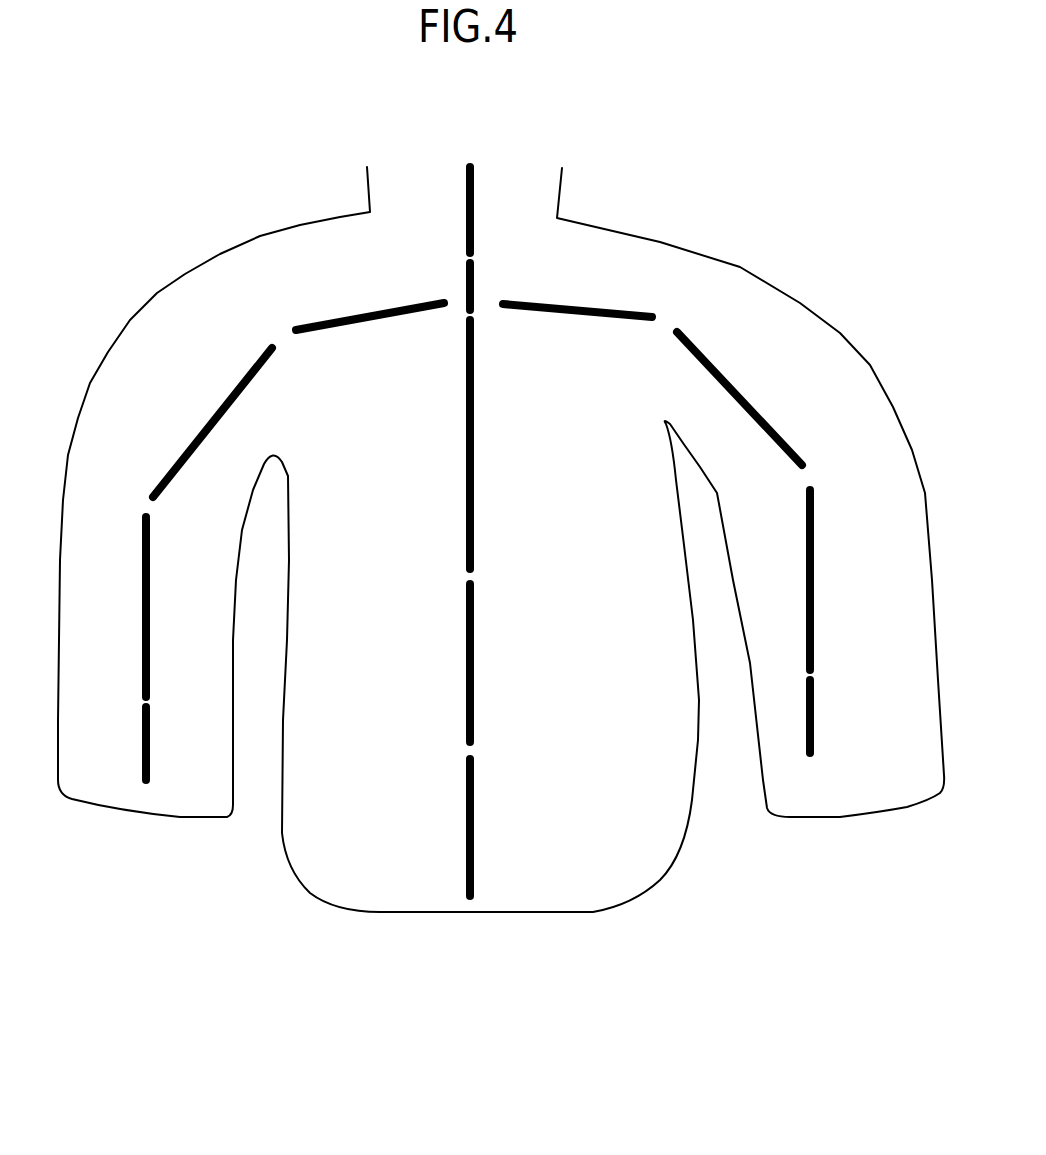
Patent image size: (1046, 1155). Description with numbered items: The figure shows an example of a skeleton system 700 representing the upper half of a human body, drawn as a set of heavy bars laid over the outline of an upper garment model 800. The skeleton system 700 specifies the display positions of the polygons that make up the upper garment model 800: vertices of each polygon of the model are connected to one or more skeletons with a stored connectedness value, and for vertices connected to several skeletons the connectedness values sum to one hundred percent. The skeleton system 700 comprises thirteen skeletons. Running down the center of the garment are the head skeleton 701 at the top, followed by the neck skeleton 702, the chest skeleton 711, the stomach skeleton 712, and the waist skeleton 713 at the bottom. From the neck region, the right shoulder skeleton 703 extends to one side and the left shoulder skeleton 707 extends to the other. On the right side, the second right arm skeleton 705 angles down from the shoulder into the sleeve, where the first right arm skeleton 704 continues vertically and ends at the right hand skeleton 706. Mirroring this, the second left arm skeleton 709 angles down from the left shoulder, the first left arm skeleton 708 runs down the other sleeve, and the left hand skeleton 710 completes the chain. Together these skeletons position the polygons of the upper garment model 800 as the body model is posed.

The skeleton system 700 is at (447, 695).
The head skeleton 701 is at (473, 167).
The neck skeleton 702 is at (473, 278).
The right shoulder skeleton 703 is at (343, 320).
The right arm 1 skeleton 704 is at (150, 587).
The right arm 2 skeleton 705 is at (250, 380).
The right hand skeleton 706 is at (150, 752).
The left shoulder skeleton 707 is at (570, 316).
The left arm 1 skeleton 708 is at (813, 532).
The left arm 2 skeleton 709 is at (712, 363).
The left hand skeleton 710 is at (813, 707).
The chest skeleton 711 is at (474, 476).
The stomach skeleton 712 is at (474, 638).
The waist skeleton 713 is at (474, 805).
The upper garment model 800 is at (740, 267).